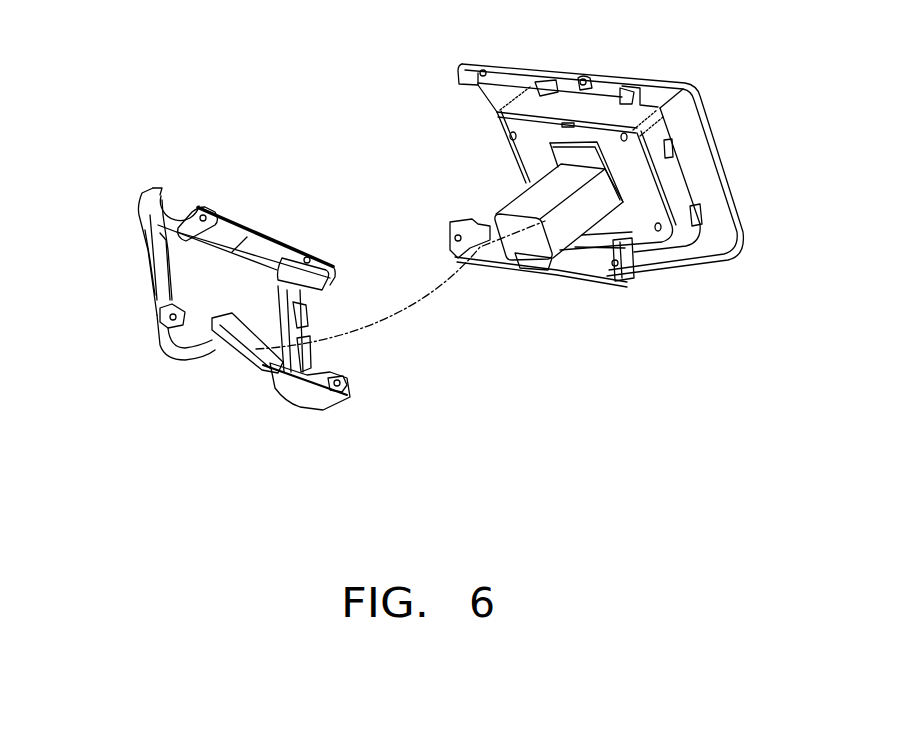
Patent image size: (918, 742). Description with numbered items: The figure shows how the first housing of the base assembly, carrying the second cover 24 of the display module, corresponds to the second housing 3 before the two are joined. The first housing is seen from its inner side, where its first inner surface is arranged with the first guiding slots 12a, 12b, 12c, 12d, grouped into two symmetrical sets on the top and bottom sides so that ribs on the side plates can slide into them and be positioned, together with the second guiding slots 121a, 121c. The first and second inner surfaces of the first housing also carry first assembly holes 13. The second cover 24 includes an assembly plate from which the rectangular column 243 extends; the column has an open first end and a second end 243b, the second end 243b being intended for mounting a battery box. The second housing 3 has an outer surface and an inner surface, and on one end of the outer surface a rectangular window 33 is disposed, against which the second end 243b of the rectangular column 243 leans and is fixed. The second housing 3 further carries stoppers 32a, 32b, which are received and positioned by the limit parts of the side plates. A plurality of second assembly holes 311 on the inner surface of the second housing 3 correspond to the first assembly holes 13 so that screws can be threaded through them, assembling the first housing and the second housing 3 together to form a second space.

The second housing 3 is at (244, 301).
The second assembly holes 311 is at (223, 213).
The stopper 32a is at (152, 248).
The stopper 32b is at (296, 313).
The rectangular window 33 is at (250, 337).
The first assembly holes 13 is at (480, 70).
The first guiding slot 12a is at (620, 92).
The first guiding slot 12b is at (475, 83).
The first guiding slot 12c is at (657, 247).
The first guiding slot 12d is at (468, 220).
The second cover 24 is at (527, 162).
The rectangular column 243 is at (520, 203).
The second end 243b is at (527, 250).
The second guiding slot 121a is at (668, 150).
The second guiding slot 121c is at (695, 215).